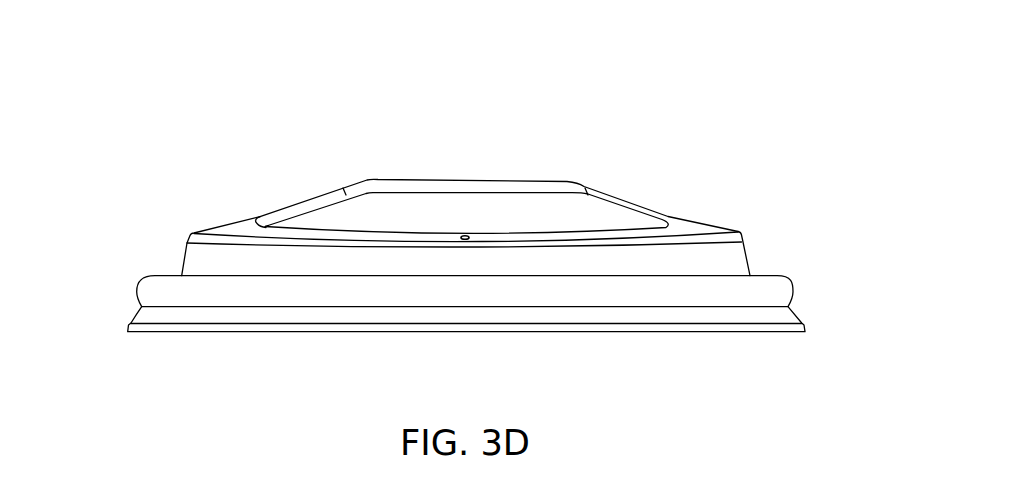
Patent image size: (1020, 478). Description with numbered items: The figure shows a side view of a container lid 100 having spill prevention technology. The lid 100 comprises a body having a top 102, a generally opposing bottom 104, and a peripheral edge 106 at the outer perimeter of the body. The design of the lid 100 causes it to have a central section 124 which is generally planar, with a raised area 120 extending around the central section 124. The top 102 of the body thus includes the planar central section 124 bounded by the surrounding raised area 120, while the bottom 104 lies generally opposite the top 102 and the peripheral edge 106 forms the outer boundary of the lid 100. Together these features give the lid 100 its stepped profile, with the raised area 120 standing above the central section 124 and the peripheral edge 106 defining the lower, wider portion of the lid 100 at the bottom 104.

The lid 100 is at (511, 246).
The top 102 is at (466, 195).
The bottom 104 is at (360, 345).
The peripheral edge 106 is at (810, 325).
The raised area 120 is at (322, 192).
The central section 124 is at (545, 232).